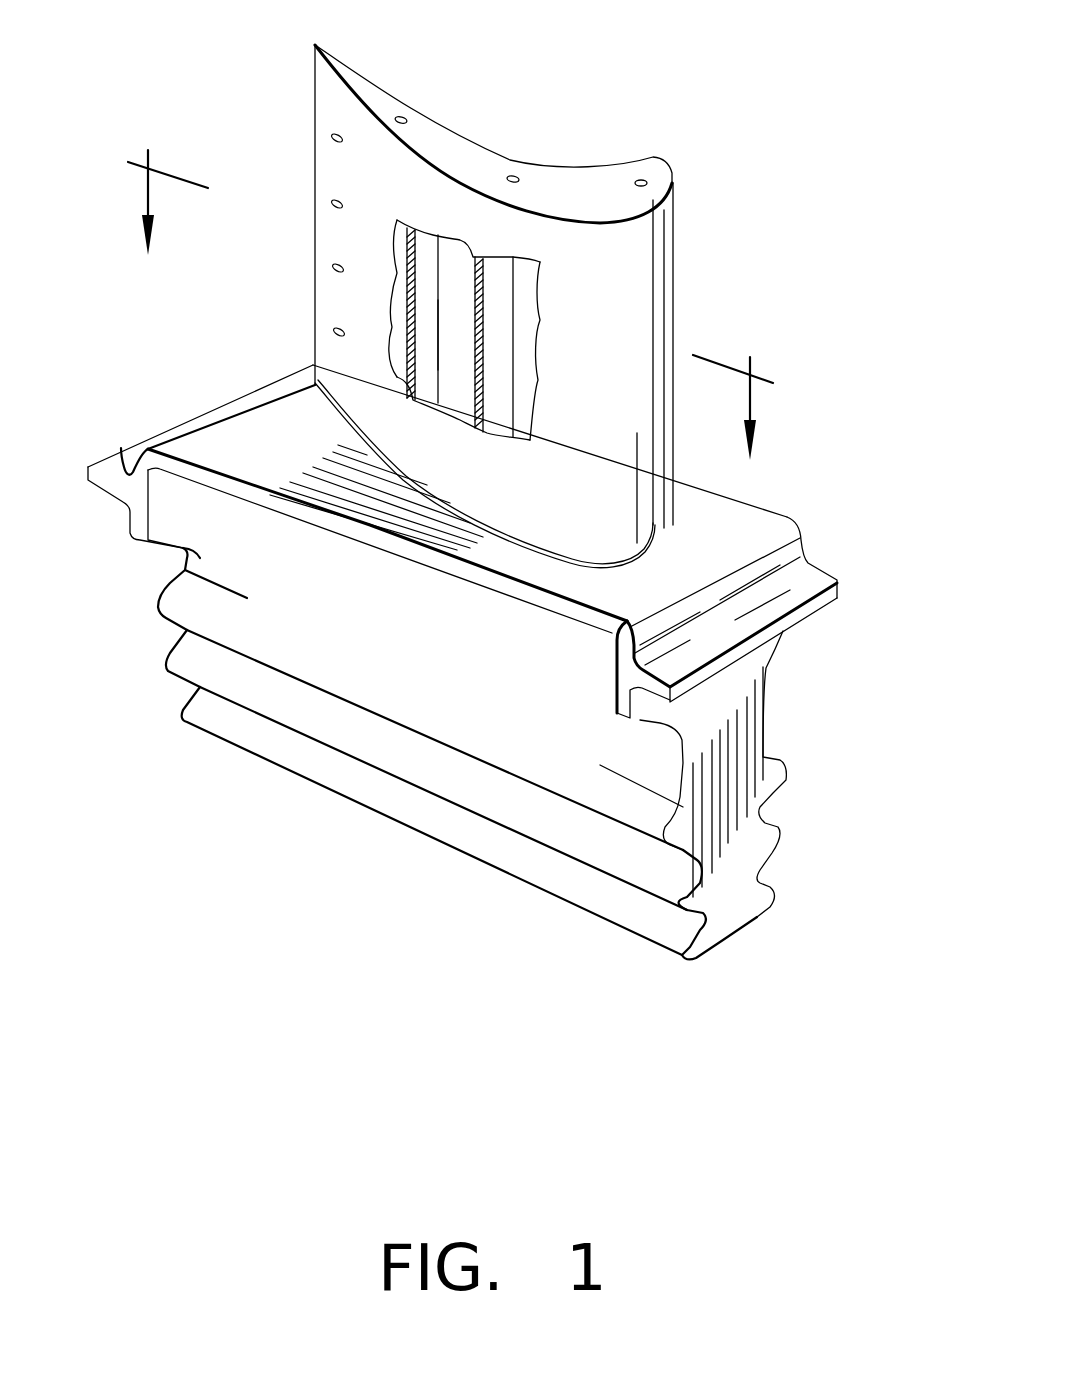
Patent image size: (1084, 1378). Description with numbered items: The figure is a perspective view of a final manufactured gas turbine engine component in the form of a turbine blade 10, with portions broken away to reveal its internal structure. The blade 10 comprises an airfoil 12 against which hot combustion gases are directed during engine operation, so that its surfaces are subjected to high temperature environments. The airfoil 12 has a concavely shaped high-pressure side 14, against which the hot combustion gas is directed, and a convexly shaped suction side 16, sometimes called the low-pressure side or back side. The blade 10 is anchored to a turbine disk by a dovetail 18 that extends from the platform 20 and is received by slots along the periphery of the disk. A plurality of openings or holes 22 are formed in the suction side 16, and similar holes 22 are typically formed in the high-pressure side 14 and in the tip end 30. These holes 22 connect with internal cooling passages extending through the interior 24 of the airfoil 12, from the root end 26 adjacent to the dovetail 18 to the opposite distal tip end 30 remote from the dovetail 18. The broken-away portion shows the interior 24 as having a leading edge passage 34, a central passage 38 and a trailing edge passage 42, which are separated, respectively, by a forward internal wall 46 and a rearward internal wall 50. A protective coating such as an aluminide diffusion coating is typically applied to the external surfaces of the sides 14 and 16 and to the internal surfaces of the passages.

The turbine blade 10 is at (270, 130).
The airfoil 12 is at (342, 298).
The high-pressure side 14 is at (427, 121).
The suction side 16 is at (603, 283).
The dovetail 18 is at (783, 790).
The platform 20 is at (767, 518).
The openings or holes 22 is at (332, 268).
The interior 24 is at (365, 355).
The root end 26 is at (526, 555).
The tip end 30 is at (471, 135).
The leading edge passage 34 is at (499, 418).
The central passage 38 is at (423, 337).
The trailing edge passage 42 is at (372, 293).
The forward internal wall 46 is at (483, 333).
The rearward internal wall 50 is at (430, 270).